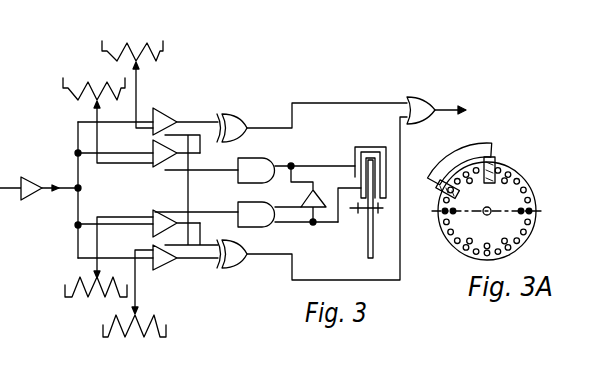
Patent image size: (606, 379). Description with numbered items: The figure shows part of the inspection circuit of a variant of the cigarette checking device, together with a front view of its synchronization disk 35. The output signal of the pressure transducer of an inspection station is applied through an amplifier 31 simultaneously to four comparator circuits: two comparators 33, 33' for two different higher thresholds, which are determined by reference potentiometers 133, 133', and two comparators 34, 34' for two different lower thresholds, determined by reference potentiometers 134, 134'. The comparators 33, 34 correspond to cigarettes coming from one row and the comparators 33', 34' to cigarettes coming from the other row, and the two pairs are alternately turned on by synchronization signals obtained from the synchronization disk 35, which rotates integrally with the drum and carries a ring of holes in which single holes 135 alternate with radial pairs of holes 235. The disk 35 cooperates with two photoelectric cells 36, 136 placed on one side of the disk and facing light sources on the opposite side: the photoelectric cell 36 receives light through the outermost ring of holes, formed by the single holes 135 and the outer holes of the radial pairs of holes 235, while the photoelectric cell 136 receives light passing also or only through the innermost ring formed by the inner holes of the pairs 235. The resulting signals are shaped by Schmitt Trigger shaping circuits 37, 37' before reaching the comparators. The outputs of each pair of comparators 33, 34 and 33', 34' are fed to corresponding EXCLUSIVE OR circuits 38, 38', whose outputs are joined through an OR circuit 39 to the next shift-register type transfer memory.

In FIG. 3, the amplifier 31 is at (30, 181).
In FIG. 3, the comparator circuit 33 is at (185, 106).
In FIG. 3, the comparator circuit 34 is at (160, 167).
In FIG. 3, the comparator circuit 33' is at (159, 213).
In FIG. 3, the comparator circuit 34' is at (185, 274).
In FIG. 3, the reference potentiometer 133 is at (136, 68).
In FIG. 3, the reference potentiometer 134 is at (107, 104).
In FIG. 3, the reference potentiometer 133' is at (100, 275).
In FIG. 3, the reference potentiometer 134' is at (134, 309).
In FIG. 3, the Schmitt Trigger shaping circuit 37 is at (296, 157).
In FIG. 3, the Schmitt Trigger shaping circuit 37' is at (273, 203).
In FIG. 3, the EXCLUSIVE OR circuit 38 is at (312, 114).
In FIG. 3, the EXCLUSIVE OR circuit 38' is at (312, 211).
In FIG. 3, the OR circuit 39 is at (430, 89).
In FIG. 3, the synchronization disk 35 is at (367, 249).
In FIG. 3A, the synchronization disk 35 is at (467, 228).
In FIG. 3, the photoelectric cell 36 is at (356, 189).
In FIG. 3A, the photoelectric cell 36 is at (437, 187).
In FIG. 3, the photoelectric cell 136 is at (368, 139).
In FIG. 3A, the photoelectric cell 136 is at (496, 160).
In FIG. 3A, the single holes 135 is at (519, 181).
In FIG. 3A, the radial pairs of holes 235 is at (518, 193).